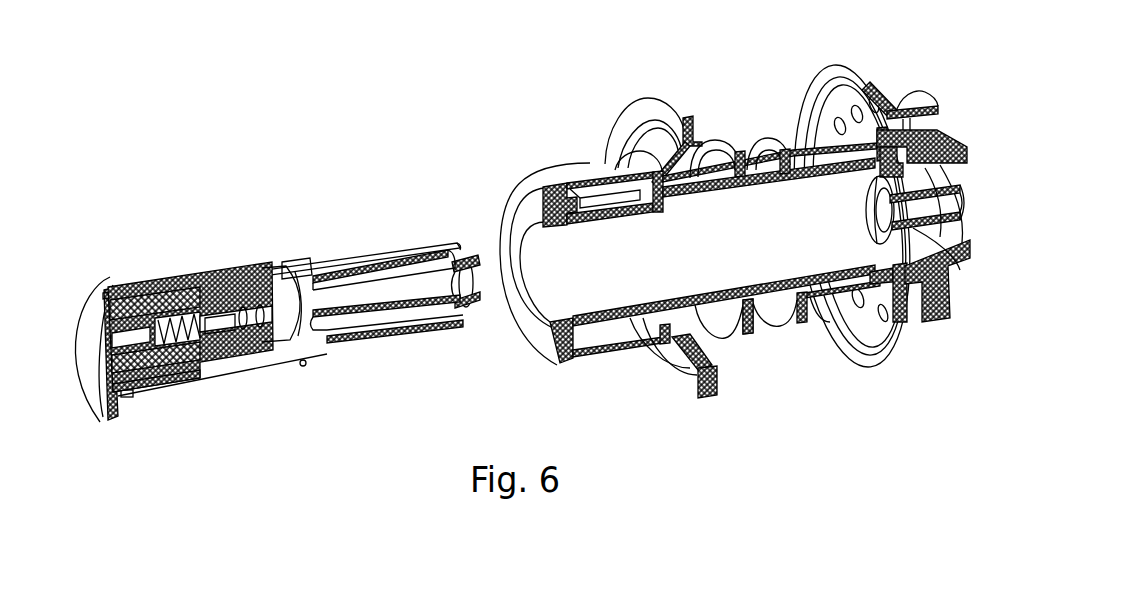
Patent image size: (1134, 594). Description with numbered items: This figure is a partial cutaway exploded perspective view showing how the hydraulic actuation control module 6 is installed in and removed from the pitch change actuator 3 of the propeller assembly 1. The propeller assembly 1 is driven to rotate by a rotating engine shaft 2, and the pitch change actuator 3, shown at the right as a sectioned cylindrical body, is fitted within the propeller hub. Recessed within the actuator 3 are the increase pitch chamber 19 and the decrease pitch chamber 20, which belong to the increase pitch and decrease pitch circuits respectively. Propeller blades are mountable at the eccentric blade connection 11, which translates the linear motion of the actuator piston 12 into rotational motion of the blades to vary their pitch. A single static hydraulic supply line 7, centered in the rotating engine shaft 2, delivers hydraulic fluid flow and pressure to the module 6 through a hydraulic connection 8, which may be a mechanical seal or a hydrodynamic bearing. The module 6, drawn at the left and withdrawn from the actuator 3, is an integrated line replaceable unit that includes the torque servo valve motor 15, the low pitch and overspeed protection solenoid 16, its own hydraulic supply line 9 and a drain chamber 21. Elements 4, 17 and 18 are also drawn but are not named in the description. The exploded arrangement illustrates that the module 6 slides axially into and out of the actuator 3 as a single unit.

The propeller assembly 1 is at (791, 61).
The rotating engine shaft 2 is at (938, 320).
The pitch change actuator 3 is at (742, 350).
The end cap 4 is at (107, 395).
The hydraulic actuation control module 6 is at (188, 441).
The static hydraulic supply line 7 is at (937, 210).
The hydraulic connection 8 is at (945, 262).
The hydraulic supply line 9 is at (401, 310).
The eccentric blade connection 11 is at (762, 160).
The actuator piston 12 is at (712, 150).
The torque servo valve motor 15 is at (150, 300).
The low pitch and overspeed protection solenoid 16 is at (251, 344).
The valve body 17 is at (221, 330).
The seal 18 is at (160, 378).
The increase pitch chamber 19 is at (592, 200).
The decrease pitch chamber 20 is at (822, 297).
The drain chamber 21 is at (424, 318).